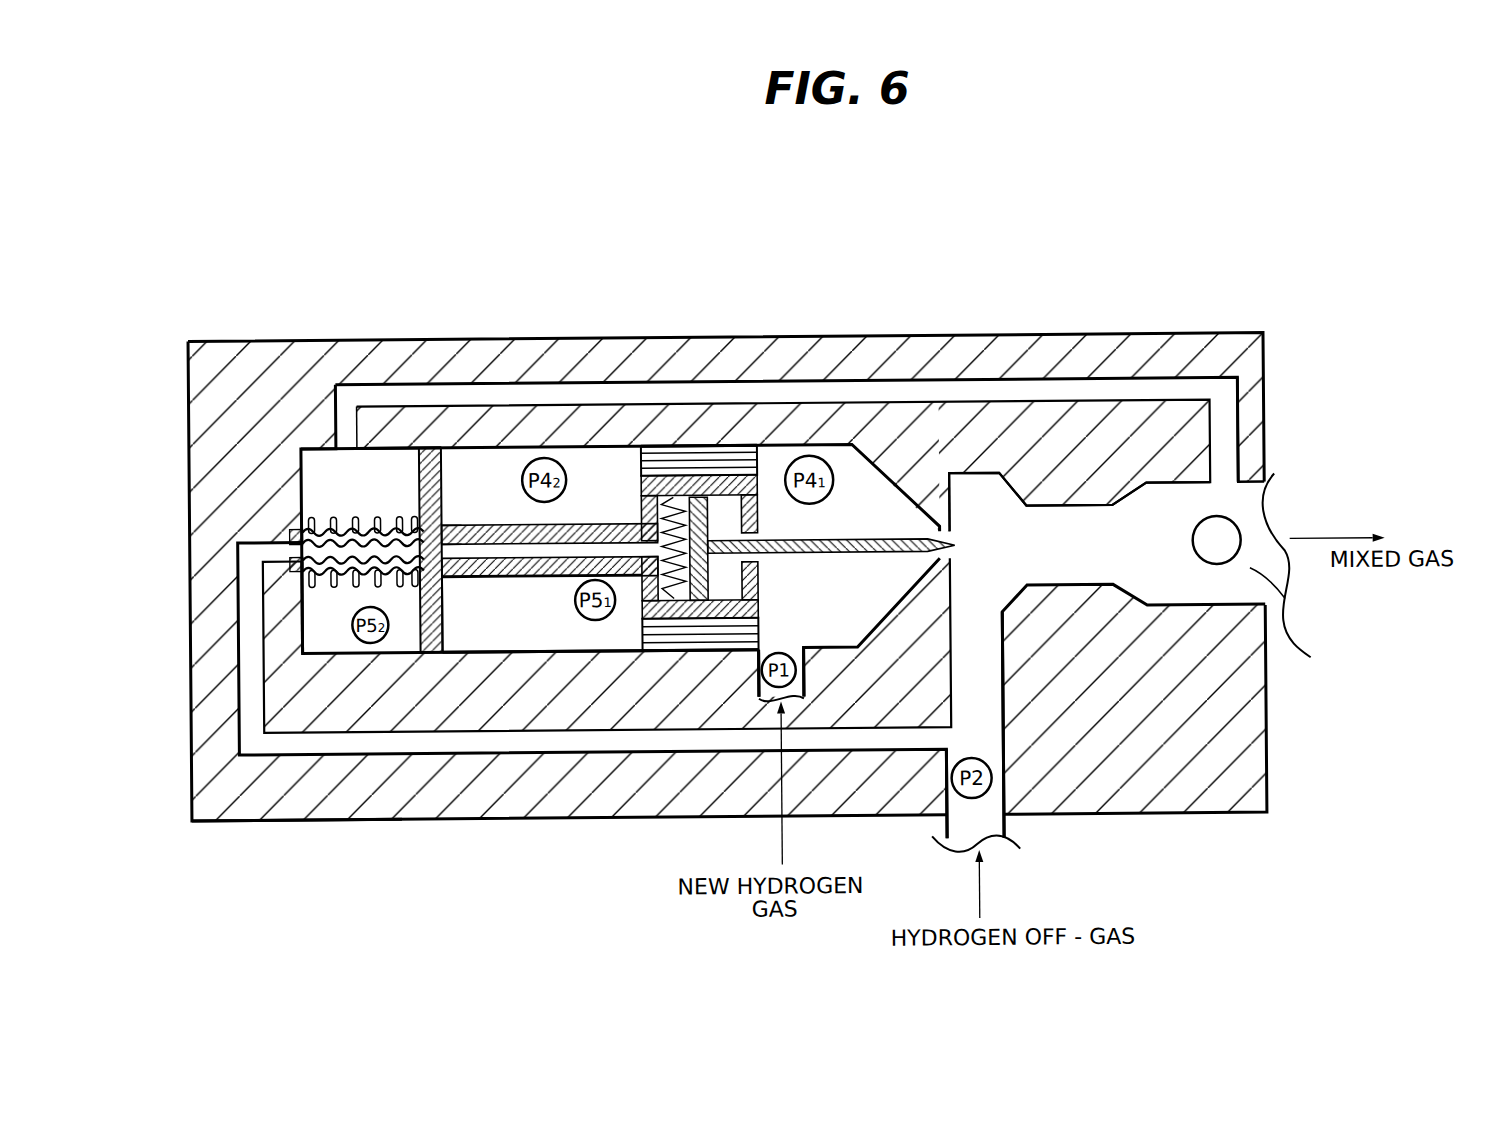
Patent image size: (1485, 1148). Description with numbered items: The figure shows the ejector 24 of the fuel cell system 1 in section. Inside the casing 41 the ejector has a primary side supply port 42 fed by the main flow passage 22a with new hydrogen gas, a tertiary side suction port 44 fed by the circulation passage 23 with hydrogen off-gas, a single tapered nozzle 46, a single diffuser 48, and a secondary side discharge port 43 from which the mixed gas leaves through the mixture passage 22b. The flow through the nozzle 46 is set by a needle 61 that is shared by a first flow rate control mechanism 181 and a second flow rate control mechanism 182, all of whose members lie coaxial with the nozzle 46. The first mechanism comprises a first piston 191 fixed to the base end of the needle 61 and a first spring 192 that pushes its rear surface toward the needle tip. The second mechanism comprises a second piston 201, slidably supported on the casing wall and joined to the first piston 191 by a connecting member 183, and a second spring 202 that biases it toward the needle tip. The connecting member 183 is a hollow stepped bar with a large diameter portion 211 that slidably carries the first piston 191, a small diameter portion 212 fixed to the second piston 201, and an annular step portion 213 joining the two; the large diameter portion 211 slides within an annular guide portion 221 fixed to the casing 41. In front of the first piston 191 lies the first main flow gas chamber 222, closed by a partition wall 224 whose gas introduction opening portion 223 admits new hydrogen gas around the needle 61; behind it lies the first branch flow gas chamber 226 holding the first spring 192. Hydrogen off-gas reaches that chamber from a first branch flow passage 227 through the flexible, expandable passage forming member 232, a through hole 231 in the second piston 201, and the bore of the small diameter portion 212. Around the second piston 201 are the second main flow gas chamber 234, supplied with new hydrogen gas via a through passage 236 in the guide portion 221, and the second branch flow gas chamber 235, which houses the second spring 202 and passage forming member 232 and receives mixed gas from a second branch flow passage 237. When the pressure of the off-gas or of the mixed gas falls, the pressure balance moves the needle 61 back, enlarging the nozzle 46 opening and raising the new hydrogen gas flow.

The fuel cell system 1 is at (197, 220).
The ejector 24 is at (804, 318).
The second flow rate control mechanism 182 is at (328, 243).
The second spring 202 is at (325, 526).
The second piston 201 is at (432, 445).
The first flow rate control mechanism 181 is at (735, 246).
The first spring 192 is at (668, 560).
The first piston 191 is at (700, 497).
The through passage 236 is at (650, 454).
The guide portion 221 is at (776, 452).
The tapered nozzle 46 is at (946, 524).
The diffuser 48 is at (1061, 522).
The secondary side discharge port 43 is at (1162, 530).
The second branch flow passage 237 is at (1238, 346).
The through hole 231 is at (445, 522).
The small diameter portion 212 is at (497, 523).
The large diameter portion 211 is at (642, 481).
The annular step portion 213 is at (642, 516).
The needle 61 is at (956, 547).
The gas introduction opening portion 223 is at (750, 556).
The partition wall 224 is at (757, 580).
The second branch flow gas chamber 235 is at (310, 615).
The connecting member 183 is at (516, 588).
The first branch flow passage 227 is at (205, 817).
The passage forming member 232 is at (338, 588).
The second main flow gas chamber 234 is at (477, 624).
The first branch flow gas chamber 226 is at (645, 642).
The first main flow gas chamber 222 is at (647, 619).
The primary side supply port 42 is at (723, 592).
The main flow passage 22a is at (798, 688).
The circulation passage 23 is at (937, 830).
The tertiary side suction port 44 is at (985, 662).
The casing 41 is at (1188, 735).
The mixture passage 22b is at (1290, 630).